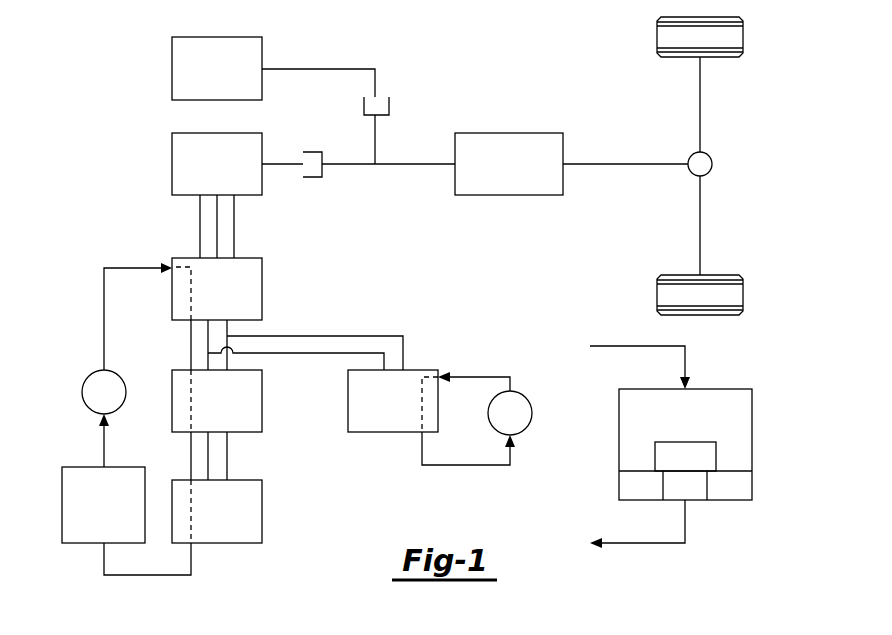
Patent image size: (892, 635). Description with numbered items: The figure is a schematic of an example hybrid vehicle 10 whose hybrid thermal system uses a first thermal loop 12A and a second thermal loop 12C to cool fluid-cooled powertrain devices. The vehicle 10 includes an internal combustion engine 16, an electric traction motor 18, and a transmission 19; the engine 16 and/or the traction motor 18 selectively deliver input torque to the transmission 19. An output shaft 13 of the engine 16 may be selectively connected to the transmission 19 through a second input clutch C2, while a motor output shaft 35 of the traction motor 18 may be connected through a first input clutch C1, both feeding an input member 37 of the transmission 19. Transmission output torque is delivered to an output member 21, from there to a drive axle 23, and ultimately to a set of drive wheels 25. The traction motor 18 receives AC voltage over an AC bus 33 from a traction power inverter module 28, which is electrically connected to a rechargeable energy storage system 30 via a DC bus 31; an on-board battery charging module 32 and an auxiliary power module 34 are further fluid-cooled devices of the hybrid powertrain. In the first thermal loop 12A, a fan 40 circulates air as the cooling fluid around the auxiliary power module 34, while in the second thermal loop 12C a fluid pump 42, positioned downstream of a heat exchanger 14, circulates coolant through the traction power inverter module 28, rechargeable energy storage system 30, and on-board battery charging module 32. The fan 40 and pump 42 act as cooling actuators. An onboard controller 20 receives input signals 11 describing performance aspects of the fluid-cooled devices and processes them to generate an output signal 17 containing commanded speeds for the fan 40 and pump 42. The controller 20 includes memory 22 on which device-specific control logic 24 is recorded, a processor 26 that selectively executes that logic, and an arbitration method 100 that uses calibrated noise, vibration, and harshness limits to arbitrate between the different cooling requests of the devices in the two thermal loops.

The hybrid vehicle 10 is at (792, 120).
The input signals 11 is at (619, 346).
The first thermal loop 12A is at (448, 466).
The second thermal loop 12C is at (104, 328).
The output shaft 13 is at (319, 69).
The heat exchanger 14 is at (115, 535).
The internal combustion engine 16 is at (228, 91).
The output signal 17 is at (637, 546).
The electric traction motor 18 is at (228, 187).
The transmission 19 is at (520, 187).
The controller 20 is at (685, 444).
The output member 21 is at (592, 164).
The memory 22 is at (647, 485).
The drive axle 23 is at (700, 99).
The device-specific control logic 24 is at (691, 485).
The drive wheels 25 is at (743, 35).
The processor 26 is at (729, 487).
The traction power inverter module 28 is at (233, 312).
The rechargeable energy storage system 30 is at (233, 424).
The DC bus 31 is at (368, 332).
The on-board battery charging module 32 is at (233, 535).
The AC bus 33 is at (249, 220).
The auxiliary power module 34 is at (401, 424).
The motor output shaft 35 is at (290, 164).
The input member 37 is at (421, 164).
The fan 40 is at (521, 424).
The fluid pump 42 is at (115, 403).
The arbitration method 100 is at (685, 456).
The first input clutch C1 is at (330, 186).
The second input clutch C2 is at (395, 86).